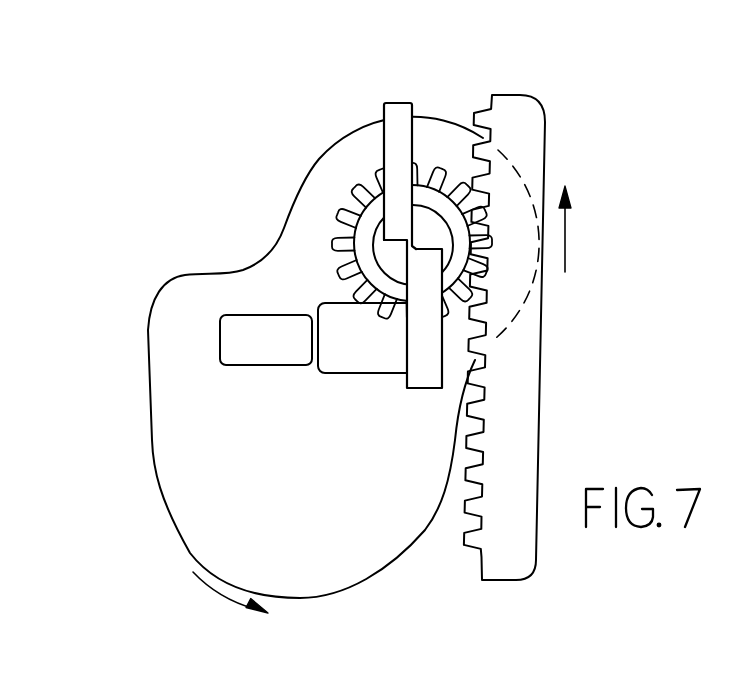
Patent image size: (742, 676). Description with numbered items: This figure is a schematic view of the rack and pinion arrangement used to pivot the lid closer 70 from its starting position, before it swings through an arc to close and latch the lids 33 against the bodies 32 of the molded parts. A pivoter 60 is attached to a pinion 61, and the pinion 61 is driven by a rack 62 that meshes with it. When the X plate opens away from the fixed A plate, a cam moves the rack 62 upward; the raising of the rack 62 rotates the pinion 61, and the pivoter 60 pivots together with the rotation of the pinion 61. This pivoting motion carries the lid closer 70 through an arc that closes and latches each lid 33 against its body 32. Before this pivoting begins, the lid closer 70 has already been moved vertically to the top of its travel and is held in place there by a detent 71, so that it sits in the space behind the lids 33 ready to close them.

The body portion 32 is at (386, 153).
The lid 33 is at (422, 342).
The pivoter 60 is at (148, 353).
The pinion 61 is at (443, 180).
The rack 62 is at (532, 128).
The lid closer 70 is at (338, 308).
The detent 71 is at (253, 325).